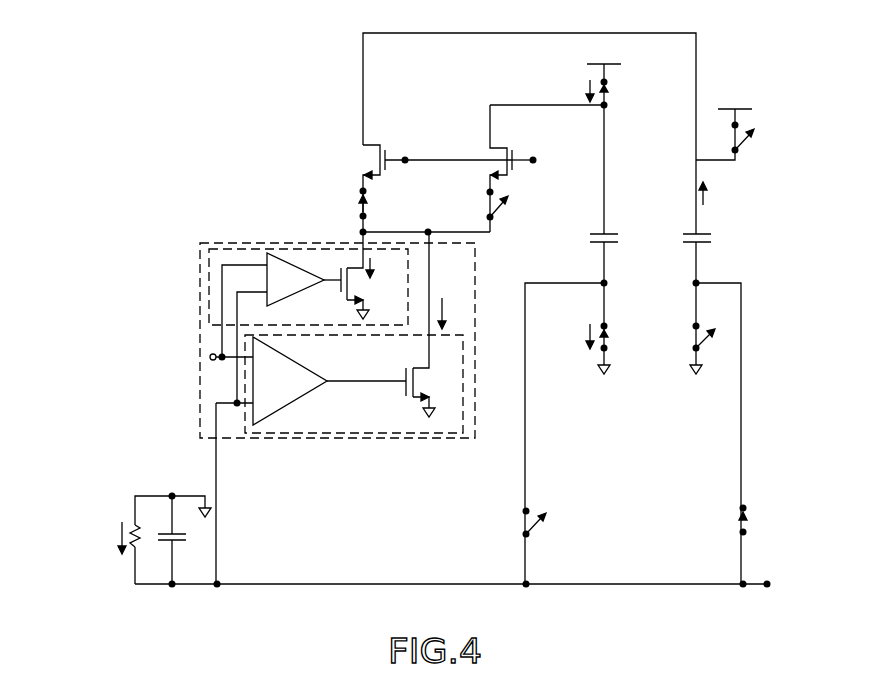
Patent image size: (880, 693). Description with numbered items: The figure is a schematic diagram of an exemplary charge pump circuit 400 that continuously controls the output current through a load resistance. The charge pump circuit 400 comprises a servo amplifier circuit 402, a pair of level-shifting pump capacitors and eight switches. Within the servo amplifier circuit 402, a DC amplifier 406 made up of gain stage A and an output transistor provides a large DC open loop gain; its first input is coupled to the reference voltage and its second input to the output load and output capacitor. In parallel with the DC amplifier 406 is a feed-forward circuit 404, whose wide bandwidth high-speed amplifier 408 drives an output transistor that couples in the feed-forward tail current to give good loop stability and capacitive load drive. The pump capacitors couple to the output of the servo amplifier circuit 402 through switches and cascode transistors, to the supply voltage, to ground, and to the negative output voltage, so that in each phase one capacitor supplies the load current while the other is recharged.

The charge pump circuit 400 is at (447, 310).
The servo amplifier circuit 402 is at (360, 338).
The feed-forward circuit 404 is at (308, 289).
The DC amplifier 406 is at (371, 433).
The wide bandwidth high-speed amplifier 408 is at (291, 255).